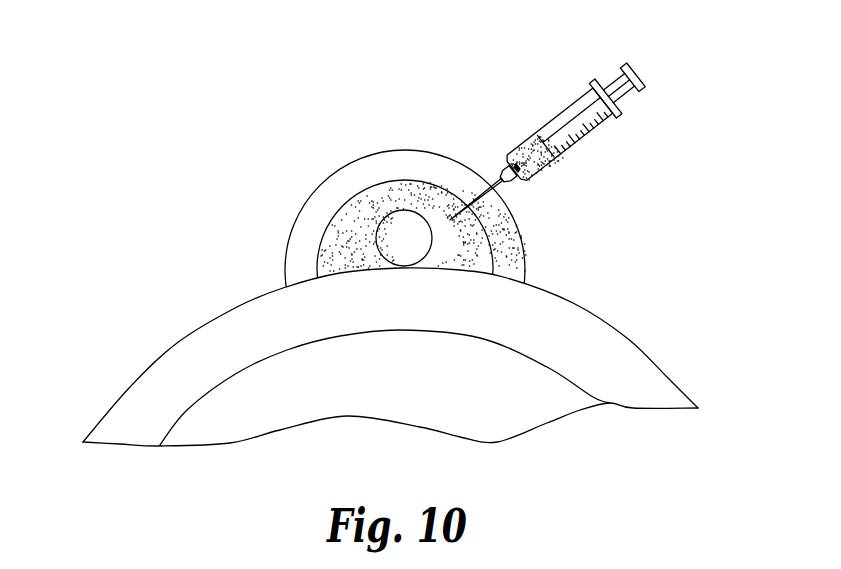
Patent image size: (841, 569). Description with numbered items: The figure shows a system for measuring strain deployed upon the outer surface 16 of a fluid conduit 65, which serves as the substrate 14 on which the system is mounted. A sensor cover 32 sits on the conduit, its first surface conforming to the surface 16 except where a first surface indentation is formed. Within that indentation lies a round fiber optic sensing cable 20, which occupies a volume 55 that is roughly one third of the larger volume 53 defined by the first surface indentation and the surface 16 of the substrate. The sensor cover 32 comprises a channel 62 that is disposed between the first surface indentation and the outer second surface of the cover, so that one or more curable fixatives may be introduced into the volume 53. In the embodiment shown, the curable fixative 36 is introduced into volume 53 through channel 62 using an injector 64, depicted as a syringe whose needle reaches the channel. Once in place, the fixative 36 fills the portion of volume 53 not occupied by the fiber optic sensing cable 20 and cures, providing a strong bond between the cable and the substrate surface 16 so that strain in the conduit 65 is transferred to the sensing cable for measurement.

The substrate 14 is at (630, 340).
The surface of the substrate 16 is at (570, 303).
The fiber optic sensing cable 20 is at (393, 222).
The sensor cover 32 is at (292, 237).
The curable fixative 36 is at (543, 174).
The volume 53 is at (343, 212).
The volume occupied by the fiber optic sensing cable 55 is at (405, 218).
The channel 62 is at (553, 215).
The injector 64 is at (572, 102).
The fluid conduit 65 is at (123, 387).